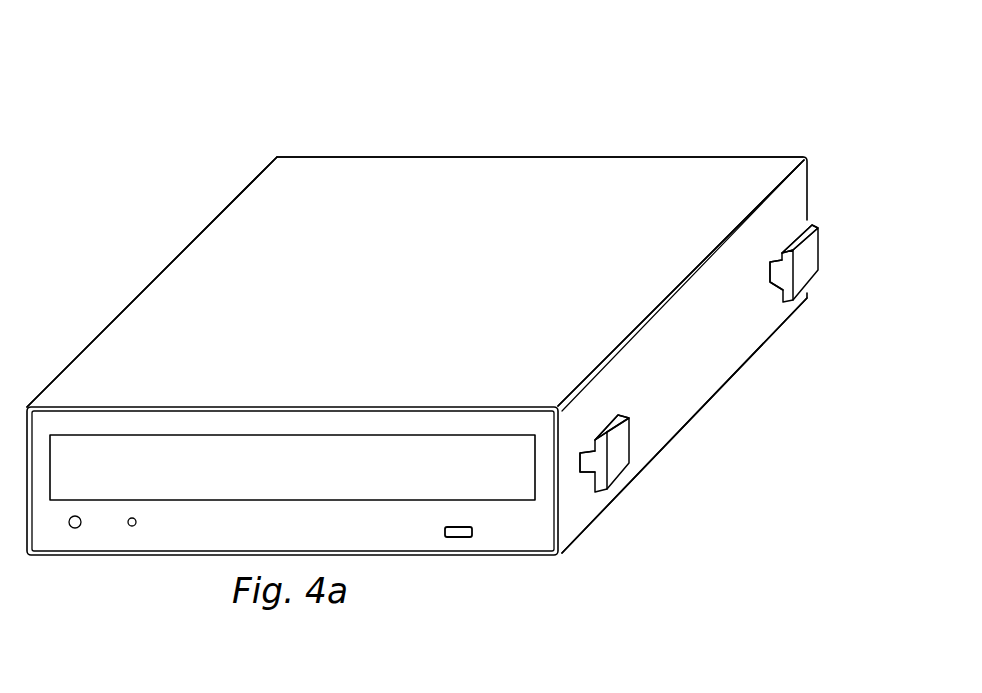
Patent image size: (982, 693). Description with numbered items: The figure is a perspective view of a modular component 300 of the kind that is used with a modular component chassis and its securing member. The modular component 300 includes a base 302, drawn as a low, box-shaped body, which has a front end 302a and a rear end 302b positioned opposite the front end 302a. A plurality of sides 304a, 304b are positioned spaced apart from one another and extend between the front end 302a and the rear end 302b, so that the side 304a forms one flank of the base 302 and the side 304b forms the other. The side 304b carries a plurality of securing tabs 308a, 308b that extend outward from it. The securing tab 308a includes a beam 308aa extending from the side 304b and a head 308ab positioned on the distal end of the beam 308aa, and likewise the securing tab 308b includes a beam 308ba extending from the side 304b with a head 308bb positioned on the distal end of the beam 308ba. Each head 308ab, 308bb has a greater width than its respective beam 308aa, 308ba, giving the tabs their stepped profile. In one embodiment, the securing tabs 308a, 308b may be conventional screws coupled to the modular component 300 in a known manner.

The modular component 300 is at (332, 63).
The base 302 is at (424, 288).
The front end 302a is at (157, 542).
The rear end 302b is at (528, 156).
The side 304a is at (152, 280).
The side 304b is at (713, 383).
The securing tab 308a is at (819, 247).
The beam 308aa is at (768, 277).
The head 308ab is at (797, 238).
The securing tab 308b is at (632, 442).
The beam 308ba is at (583, 477).
The head 308bb is at (610, 422).